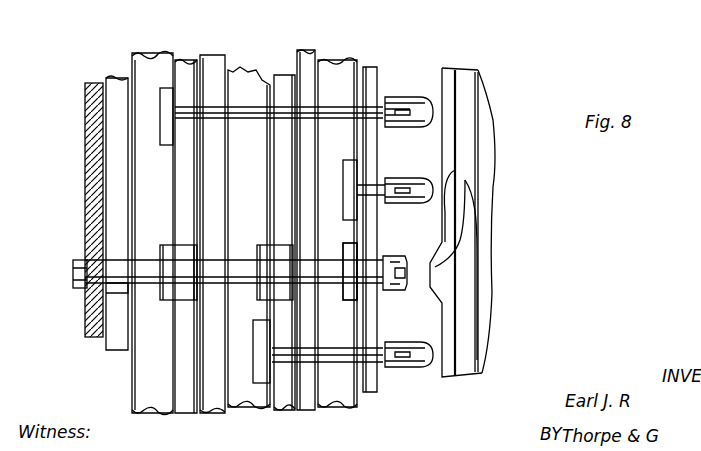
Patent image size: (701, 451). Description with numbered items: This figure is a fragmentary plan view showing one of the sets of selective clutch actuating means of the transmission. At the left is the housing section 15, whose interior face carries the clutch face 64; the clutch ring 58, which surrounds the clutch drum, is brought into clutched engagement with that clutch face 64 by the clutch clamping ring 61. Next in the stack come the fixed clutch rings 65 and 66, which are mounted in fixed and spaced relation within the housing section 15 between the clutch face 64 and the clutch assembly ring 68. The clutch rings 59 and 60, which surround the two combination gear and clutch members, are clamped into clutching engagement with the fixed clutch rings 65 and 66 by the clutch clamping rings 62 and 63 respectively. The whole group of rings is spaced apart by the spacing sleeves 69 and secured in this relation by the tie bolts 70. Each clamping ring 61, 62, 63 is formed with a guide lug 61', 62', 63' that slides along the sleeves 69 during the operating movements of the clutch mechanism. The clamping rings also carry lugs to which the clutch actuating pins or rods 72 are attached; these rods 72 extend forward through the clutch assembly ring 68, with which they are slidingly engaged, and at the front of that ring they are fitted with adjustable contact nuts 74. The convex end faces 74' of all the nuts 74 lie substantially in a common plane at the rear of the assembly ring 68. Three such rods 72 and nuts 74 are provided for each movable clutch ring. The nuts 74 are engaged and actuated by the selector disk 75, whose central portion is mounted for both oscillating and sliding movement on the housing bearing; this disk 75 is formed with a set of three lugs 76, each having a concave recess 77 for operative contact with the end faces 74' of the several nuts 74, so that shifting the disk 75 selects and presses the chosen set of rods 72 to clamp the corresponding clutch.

The housing section 15 is at (85, 96).
The clutch face 64 is at (90, 124).
The fixed clutch ring 65 is at (187, 75).
The clutch ring 59 is at (213, 66).
The clutch clamping ring 62 is at (249, 220).
The fixed clutch ring 66 is at (284, 78).
The clutch ring 60 is at (307, 58).
The clutch clamping ring 63 is at (344, 204).
The guide lug 63' is at (341, 287).
The clutch assembly ring 68 is at (370, 76).
The clutch actuating pin 72 is at (345, 110).
The contact nut 74 is at (418, 228).
The convex end face 74' is at (494, 207).
The selector disk 75 is at (490, 234).
The lug 76 is at (455, 170).
The concave recess 77 is at (500, 180).
The spacing sleeve 69 is at (145, 265).
The tie bolt 70 is at (73, 270).
The clutch ring 58 is at (112, 252).
The clutch clamping ring 61 is at (94, 299).
The guide lug 61' is at (168, 258).
The guide lug 62' is at (266, 295).